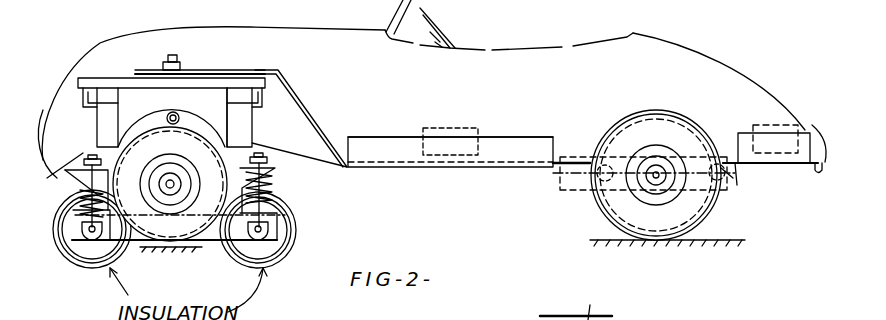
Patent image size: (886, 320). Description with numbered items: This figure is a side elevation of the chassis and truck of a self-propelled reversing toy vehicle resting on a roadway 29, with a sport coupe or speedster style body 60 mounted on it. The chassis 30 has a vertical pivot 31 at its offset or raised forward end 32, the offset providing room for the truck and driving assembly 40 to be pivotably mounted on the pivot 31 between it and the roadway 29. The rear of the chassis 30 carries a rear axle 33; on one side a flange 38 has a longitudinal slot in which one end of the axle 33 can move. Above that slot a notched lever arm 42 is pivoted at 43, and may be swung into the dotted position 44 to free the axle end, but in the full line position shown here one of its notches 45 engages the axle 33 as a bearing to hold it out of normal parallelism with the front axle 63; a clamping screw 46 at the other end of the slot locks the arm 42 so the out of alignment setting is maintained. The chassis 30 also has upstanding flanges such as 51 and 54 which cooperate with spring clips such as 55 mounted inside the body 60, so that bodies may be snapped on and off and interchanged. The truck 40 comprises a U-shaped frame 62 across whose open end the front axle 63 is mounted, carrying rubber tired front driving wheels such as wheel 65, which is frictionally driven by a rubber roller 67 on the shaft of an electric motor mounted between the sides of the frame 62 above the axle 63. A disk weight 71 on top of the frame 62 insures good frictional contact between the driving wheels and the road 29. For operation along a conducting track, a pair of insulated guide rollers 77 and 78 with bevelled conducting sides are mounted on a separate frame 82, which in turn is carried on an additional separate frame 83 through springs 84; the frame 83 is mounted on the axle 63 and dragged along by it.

The roadway 29 is at (152, 252).
The chassis 30 is at (460, 170).
The vertical pivot 31 is at (166, 60).
The forward end 32 is at (243, 68).
The rear axle 33 is at (652, 180).
The flange 38 is at (724, 180).
The truck and driving assembly 40 is at (253, 118).
The notched lever arm 42 is at (613, 154).
The pivot 43 is at (596, 176).
The dotted position 44 is at (760, 312).
The notches 45 is at (760, 312).
The clamping screw 46 is at (722, 172).
The upstanding flange 51 is at (510, 143).
The upstanding flange 54 is at (803, 137).
The spring clip 55 is at (453, 130).
The body 60 is at (718, 50).
The U-shaped frame 62 is at (158, 109).
The front axle 63 is at (170, 182).
The front driving wheel 65 is at (180, 138).
The rubber roller 67 is at (177, 112).
The disk weight 71 is at (250, 80).
The insulated guide roller 77 is at (92, 262).
The insulated guide roller 78 is at (279, 258).
The separate frame 82 is at (231, 234).
The additional separate frame 83 is at (265, 170).
The springs 84 is at (280, 210).